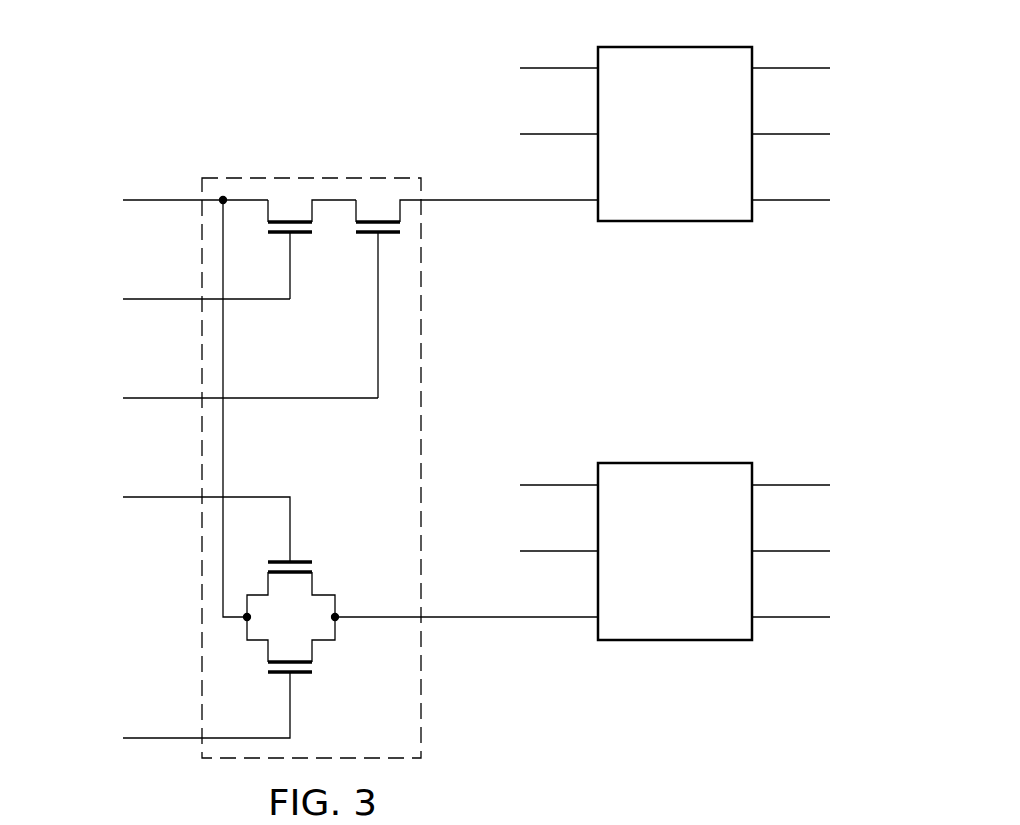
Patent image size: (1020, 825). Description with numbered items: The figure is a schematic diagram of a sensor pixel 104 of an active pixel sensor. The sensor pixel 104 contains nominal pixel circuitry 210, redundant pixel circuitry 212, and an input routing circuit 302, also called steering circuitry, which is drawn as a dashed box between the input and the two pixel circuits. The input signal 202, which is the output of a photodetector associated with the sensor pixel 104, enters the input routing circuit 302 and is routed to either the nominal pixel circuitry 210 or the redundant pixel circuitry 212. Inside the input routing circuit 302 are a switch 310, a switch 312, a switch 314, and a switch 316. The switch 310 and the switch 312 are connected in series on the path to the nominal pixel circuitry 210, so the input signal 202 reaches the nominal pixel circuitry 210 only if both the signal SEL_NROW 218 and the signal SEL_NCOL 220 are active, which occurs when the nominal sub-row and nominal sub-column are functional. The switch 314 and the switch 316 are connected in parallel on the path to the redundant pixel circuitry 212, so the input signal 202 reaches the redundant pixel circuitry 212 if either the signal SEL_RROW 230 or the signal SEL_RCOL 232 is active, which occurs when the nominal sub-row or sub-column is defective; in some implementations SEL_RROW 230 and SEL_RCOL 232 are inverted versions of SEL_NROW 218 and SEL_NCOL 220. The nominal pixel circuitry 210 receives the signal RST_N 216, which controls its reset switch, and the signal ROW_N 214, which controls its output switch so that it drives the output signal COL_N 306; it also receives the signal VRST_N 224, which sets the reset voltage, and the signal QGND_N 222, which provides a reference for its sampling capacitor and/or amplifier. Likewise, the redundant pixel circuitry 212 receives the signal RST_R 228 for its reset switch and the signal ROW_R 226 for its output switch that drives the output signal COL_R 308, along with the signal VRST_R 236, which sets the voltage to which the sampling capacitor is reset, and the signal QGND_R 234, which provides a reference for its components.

The sensor pixel 104 is at (360, 72).
The input signal 202 is at (163, 198).
The nominal pixel circuitry 210 is at (695, 177).
The redundant pixel circuitry 212 is at (695, 593).
The signal ROW_N 214 is at (558, 132).
The signal RST_N 216 is at (558, 66).
The signal SEL_NROW 218 is at (163, 297).
The signal SEL_NCOL 220 is at (163, 396).
The signal QGND_N 222 is at (790, 132).
The signal VRST_N 224 is at (790, 66).
The signal ROW_R 226 is at (558, 549).
The signal RST_R 228 is at (558, 483).
The signal SEL_RROW 230 is at (163, 495).
The signal SEL_RCOL 232 is at (163, 736).
The signal QGND_R 234 is at (790, 549).
The signal VRST_R 236 is at (790, 483).
The input routing circuit 302 is at (284, 174).
The output signal COL_N 306 is at (790, 198).
The output signal COL_R 308 is at (790, 615).
The switch 310 is at (278, 237).
The switch 312 is at (366, 237).
The switch 314 is at (278, 560).
The switch 316 is at (278, 674).